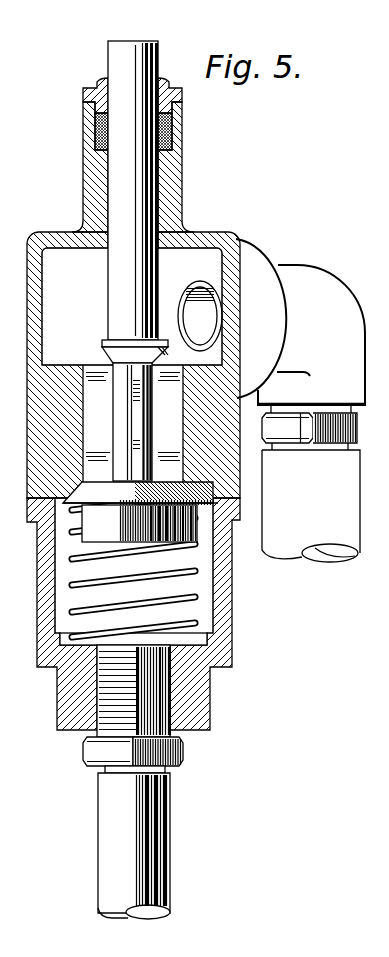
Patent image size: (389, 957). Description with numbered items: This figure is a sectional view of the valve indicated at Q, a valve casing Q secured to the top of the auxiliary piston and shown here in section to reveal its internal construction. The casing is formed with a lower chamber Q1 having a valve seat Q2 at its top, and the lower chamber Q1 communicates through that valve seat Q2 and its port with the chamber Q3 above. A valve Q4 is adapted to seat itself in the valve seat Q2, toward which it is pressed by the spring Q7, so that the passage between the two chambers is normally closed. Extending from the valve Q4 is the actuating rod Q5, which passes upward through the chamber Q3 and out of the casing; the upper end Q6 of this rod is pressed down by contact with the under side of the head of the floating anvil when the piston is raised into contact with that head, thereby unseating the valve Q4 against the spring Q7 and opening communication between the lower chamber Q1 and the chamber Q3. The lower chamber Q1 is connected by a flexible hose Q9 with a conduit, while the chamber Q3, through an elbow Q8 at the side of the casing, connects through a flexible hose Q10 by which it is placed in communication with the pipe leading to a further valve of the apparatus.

The valve casing Q is at (150, 288).
The lower chamber Q1 is at (202, 616).
The valve seat Q2 is at (76, 505).
The chamber Q3 is at (132, 306).
The valve Q4 is at (140, 511).
The actuating rod Q5 is at (125, 270).
The upper end of actuating rod Q6 is at (143, 42).
The spring Q7 is at (197, 572).
The elbow Q8 is at (300, 322).
The flexible hose Q9 is at (133, 782).
The flexible hose Q10 is at (311, 483).